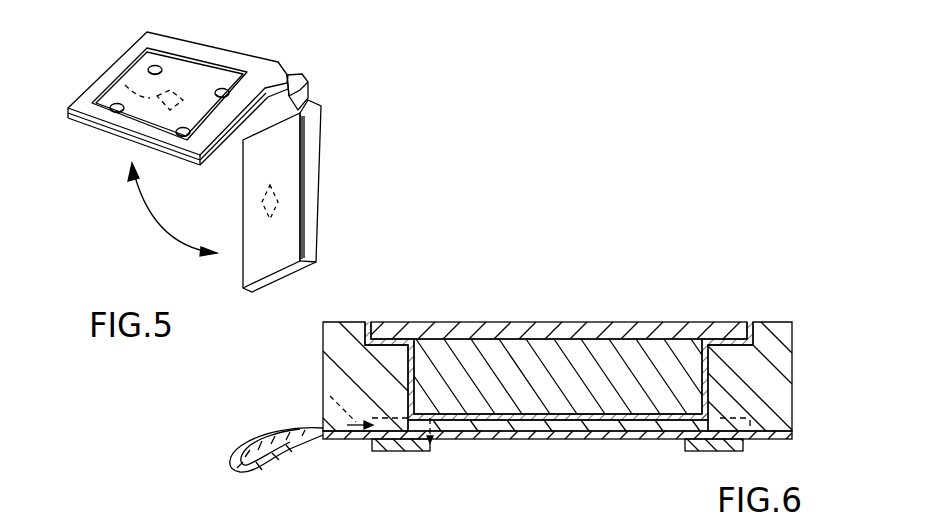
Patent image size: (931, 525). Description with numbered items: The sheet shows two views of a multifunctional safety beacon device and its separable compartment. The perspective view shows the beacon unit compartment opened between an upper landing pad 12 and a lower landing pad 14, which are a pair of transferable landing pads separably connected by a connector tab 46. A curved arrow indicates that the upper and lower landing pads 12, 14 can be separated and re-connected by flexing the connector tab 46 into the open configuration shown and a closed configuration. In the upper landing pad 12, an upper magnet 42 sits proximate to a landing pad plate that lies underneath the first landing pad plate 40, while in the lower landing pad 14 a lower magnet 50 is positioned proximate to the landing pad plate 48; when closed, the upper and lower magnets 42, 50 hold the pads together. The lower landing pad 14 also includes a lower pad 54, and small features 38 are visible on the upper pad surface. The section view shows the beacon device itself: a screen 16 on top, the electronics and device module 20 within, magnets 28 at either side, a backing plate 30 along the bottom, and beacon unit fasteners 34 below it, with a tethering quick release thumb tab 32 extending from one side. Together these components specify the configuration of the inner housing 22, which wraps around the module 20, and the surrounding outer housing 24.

In FIG. 5, the upper landing pad 12 is at (92, 31).
In FIG. 5, the lower landing pad 14 is at (348, 180).
In FIG. 5, the pads 38 is at (163, 68).
In FIG. 5, the first landing pad plate 40 is at (209, 95).
In FIG. 5, the upper magnet 42 is at (112, 75).
In FIG. 5, the connector tab 46 is at (307, 76).
In FIG. 5, the upper landing pad plate 48 is at (283, 261).
In FIG. 5, the lower magnet 50 is at (255, 212).
In FIG. 5, the lower pad 54 is at (310, 230).
In FIG. 6, the screen 16 is at (612, 326).
In FIG. 6, the electronics and device module 20 is at (518, 347).
In FIG. 6, the inner housing 22 is at (752, 340).
In FIG. 6, the outer housing 24 is at (787, 360).
In FIG. 6, the magnets 28 is at (325, 396).
In FIG. 6, the backing plate 30 is at (583, 437).
In FIG. 6, the tethering quick release thumb tab 32 is at (285, 432).
In FIG. 6, the beacon unit fasteners 34 is at (400, 451).